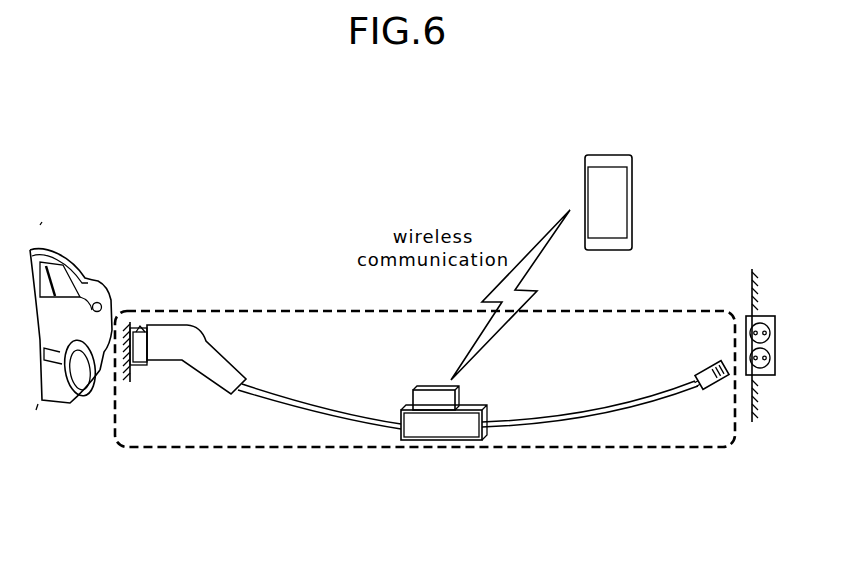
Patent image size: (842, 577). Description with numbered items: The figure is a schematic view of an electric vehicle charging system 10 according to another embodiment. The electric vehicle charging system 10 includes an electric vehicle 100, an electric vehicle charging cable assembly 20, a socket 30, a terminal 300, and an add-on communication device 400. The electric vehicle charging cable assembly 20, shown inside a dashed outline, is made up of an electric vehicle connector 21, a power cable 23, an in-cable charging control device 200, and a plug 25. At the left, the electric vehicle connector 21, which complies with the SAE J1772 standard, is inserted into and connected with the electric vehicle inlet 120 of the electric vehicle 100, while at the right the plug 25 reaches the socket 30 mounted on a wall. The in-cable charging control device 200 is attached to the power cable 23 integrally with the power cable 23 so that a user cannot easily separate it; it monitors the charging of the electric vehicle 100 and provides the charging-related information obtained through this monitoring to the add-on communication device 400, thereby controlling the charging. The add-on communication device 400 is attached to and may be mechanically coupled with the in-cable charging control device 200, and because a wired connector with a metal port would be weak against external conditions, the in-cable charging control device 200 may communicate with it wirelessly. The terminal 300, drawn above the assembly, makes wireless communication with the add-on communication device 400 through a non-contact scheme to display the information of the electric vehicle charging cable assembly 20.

The electric vehicle charging system 10 is at (45, 124).
The electric vehicle 100 is at (70, 260).
The electric vehicle inlet 120 is at (99, 303).
The electric vehicle charging cable assembly 20 is at (274, 308).
The electric vehicle connector 21 is at (228, 372).
The power cable 23 is at (333, 412).
The in-cable charging control device 200 is at (441, 441).
The add-on communication device 400 is at (431, 388).
The plug 25 is at (705, 368).
The socket 30 is at (770, 312).
The terminal 300 is at (607, 157).